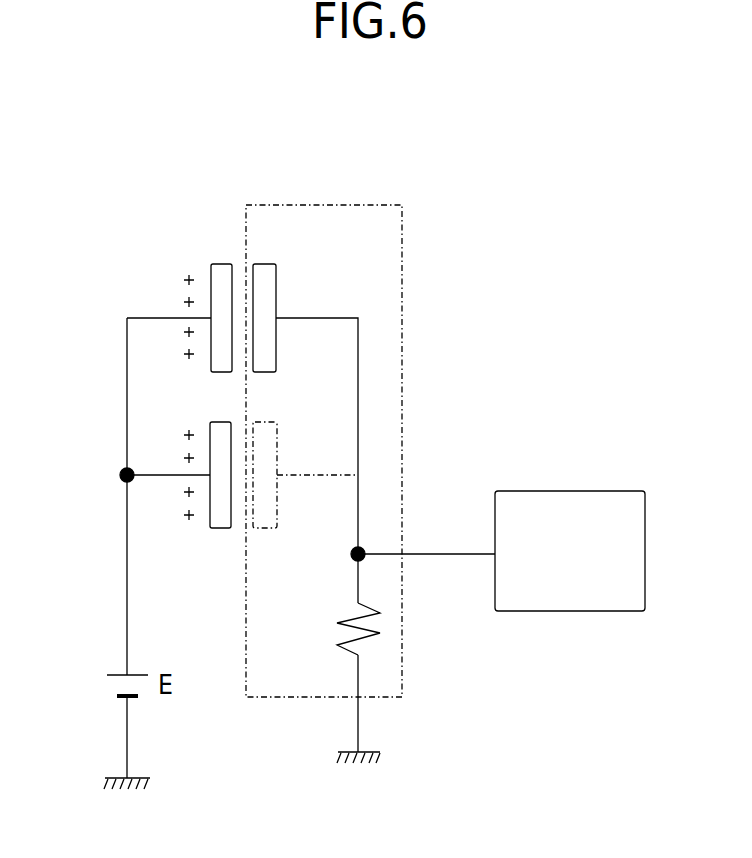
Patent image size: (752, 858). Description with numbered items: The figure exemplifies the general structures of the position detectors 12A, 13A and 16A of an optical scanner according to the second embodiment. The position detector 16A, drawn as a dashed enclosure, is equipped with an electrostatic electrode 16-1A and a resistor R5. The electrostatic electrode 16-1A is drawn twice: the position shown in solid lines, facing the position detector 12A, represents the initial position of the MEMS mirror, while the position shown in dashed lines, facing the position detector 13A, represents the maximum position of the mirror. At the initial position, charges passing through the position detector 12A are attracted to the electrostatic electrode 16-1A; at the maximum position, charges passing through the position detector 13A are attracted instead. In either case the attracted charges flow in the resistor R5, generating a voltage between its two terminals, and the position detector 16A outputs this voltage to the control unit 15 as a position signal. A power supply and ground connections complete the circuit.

The position detector 16A is at (327, 204).
The position detector 12A is at (222, 259).
The position detector 13A is at (218, 531).
The electrostatic electrode 16-1A is at (263, 263).
The resistor R5 is at (343, 642).
The control unit 15 is at (570, 490).